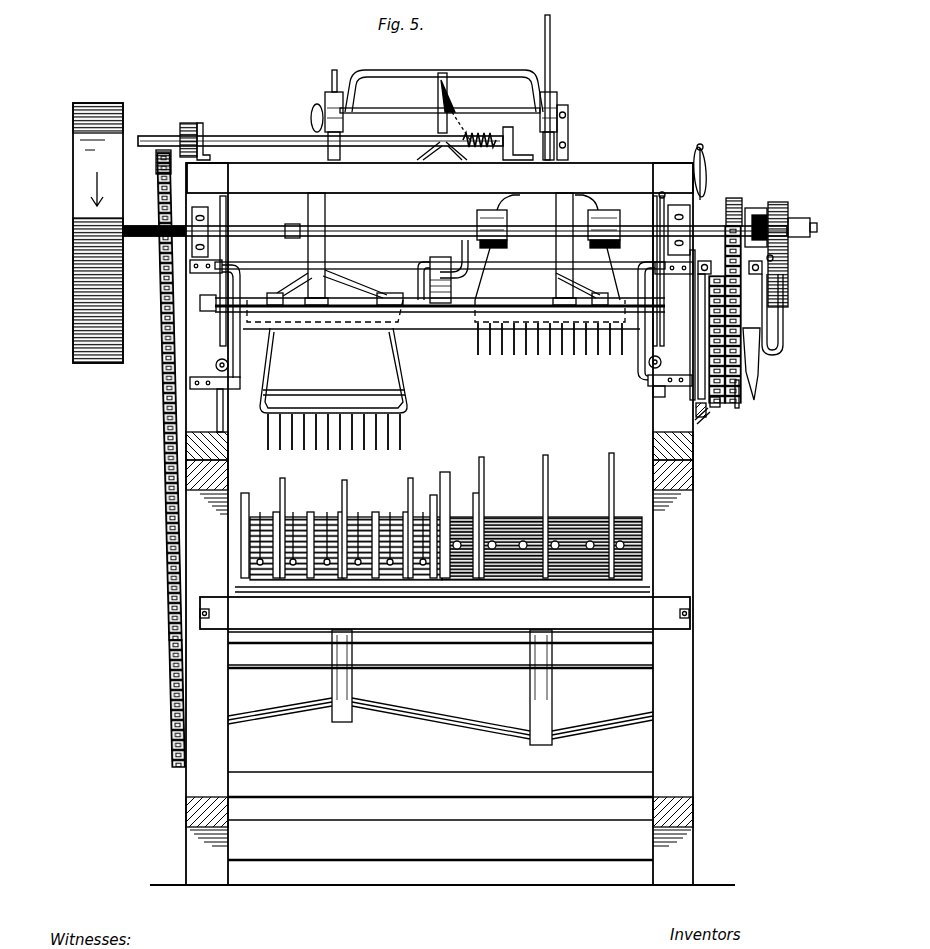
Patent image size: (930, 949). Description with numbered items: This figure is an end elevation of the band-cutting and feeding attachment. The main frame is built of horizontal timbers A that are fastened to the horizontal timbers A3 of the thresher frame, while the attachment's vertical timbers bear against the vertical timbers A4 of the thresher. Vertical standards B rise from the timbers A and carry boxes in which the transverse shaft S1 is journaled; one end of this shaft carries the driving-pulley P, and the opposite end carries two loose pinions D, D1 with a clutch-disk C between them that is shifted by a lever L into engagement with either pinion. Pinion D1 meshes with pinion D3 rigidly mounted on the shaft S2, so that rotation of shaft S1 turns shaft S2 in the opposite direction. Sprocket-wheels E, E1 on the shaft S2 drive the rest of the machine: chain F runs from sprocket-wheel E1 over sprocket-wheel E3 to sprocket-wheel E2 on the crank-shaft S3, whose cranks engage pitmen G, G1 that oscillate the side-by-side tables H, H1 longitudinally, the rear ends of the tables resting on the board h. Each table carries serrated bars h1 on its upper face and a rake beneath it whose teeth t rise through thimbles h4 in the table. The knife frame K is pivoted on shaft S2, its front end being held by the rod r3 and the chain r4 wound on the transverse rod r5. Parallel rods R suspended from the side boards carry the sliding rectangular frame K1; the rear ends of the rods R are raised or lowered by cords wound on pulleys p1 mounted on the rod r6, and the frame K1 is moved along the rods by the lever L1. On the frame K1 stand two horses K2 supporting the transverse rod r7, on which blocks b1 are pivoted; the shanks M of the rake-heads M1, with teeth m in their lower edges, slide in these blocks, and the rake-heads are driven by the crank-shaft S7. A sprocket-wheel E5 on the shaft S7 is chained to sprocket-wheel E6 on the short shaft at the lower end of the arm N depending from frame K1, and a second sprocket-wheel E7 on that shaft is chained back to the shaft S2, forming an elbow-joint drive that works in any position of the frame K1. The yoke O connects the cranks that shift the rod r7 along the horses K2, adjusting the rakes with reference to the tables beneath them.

The horizontal timbers A is at (185, 458).
The horizontal timbers of thresher-frame A3 is at (228, 470).
The vertical timbers of thresher-frame A4 is at (202, 760).
The board h is at (640, 598).
The pitman G is at (552, 702).
The pitman G1 is at (337, 688).
The crank-shaft S3 is at (448, 722).
The driving-pulley P is at (140, 202).
The sprocket-wheel E is at (162, 285).
The sprocket-wheel E1 is at (158, 172).
The shaft S1 is at (160, 238).
The horses K2 is at (310, 135).
The transverse rod r5 is at (385, 146).
The transverse yoke O is at (440, 85).
The blocks b1 is at (325, 95).
The shanks M is at (336, 70).
The transverse rod r7 is at (368, 108).
The rod r3 is at (456, 100).
The chain r4 is at (470, 135).
The sprocket-wheel E5 is at (707, 185).
The lever L1 is at (703, 147).
The pulleys p1 is at (227, 220).
The transverse rod r6 is at (290, 226).
The pinion D is at (735, 198).
The clutch-disk C is at (758, 208).
The pinion D1 is at (796, 205).
The shaft S2 is at (773, 258).
The pinion D3 is at (785, 275).
The lever L is at (783, 322).
The sprocket-wheel E3 is at (757, 348).
The arm N is at (698, 314).
The sprocket-wheel E2 is at (742, 387).
The sprocket-wheel E7 is at (706, 415).
The sprocket-wheel E6 is at (739, 408).
The vertical standards B is at (200, 338).
The rods R is at (216, 368).
The chain F is at (200, 304).
The crank-shaft S7 is at (445, 255).
The rake-heads M1 is at (470, 285).
The frame K is at (438, 330).
The rectangular frame K1 is at (290, 380).
The teeth m is at (402, 432).
The longitudinally-oscillating table H is at (505, 500).
The longitudinally-oscillating table H1 is at (380, 518).
The teeth t is at (358, 510).
The longitudinal parallel bars h1 is at (286, 490).
The thimbles h4 is at (330, 507).